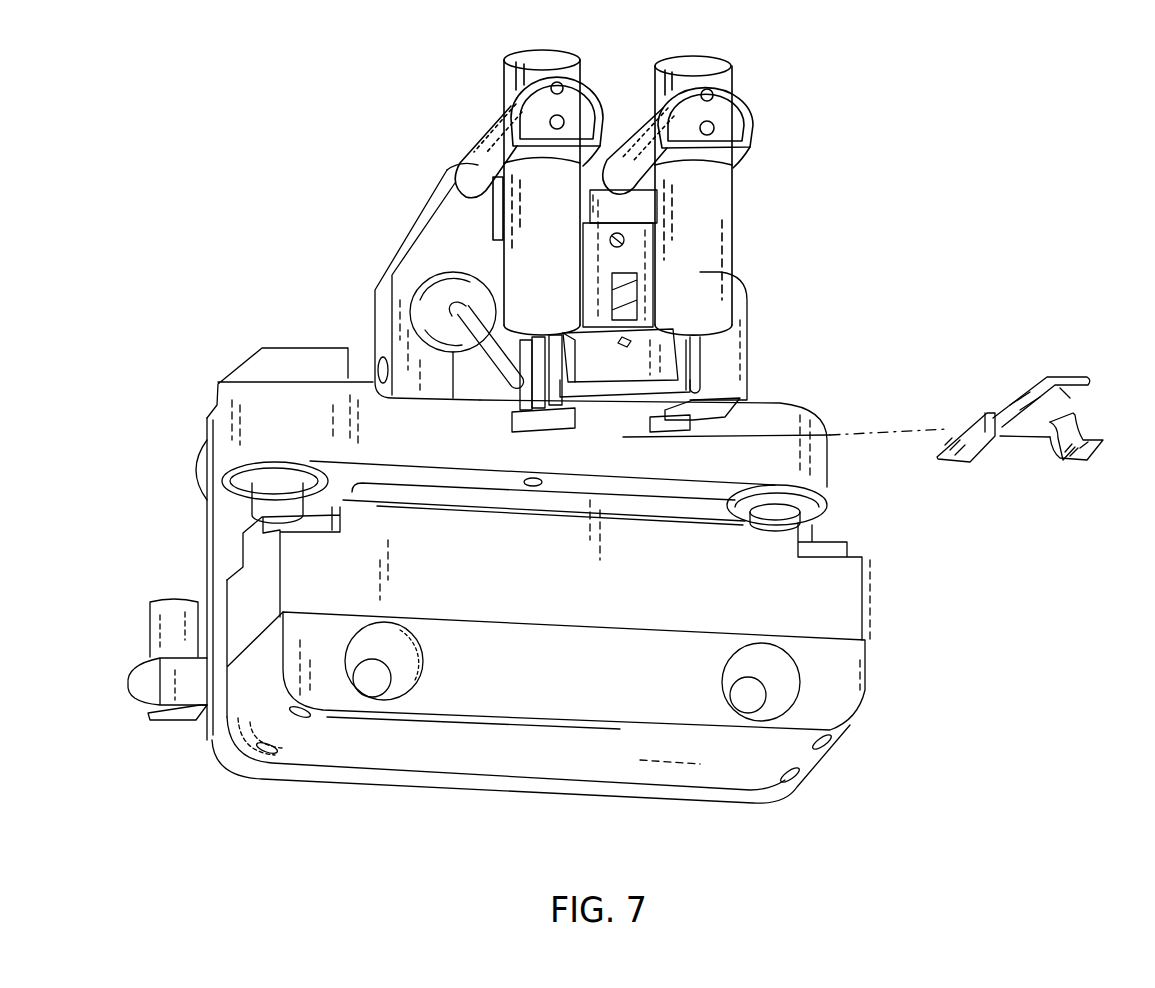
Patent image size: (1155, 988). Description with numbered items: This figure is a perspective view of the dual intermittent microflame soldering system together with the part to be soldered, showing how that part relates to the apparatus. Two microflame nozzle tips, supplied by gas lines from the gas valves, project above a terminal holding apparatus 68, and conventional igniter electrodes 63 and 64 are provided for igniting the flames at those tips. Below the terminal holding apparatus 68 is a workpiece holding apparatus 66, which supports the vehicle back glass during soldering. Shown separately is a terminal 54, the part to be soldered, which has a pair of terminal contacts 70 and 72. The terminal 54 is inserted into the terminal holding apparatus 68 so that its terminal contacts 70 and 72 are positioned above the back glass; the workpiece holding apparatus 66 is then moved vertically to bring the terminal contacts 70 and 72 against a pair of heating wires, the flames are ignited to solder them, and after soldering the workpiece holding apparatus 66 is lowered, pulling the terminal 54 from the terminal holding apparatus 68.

The terminal 54 is at (1052, 390).
The igniter electrode 63 is at (700, 372).
The igniter electrode 64 is at (500, 370).
The workpiece holding apparatus 66 is at (853, 603).
The terminal holding apparatus 68 is at (712, 404).
The terminal contact 70 is at (1090, 462).
The terminal contact 72 is at (962, 462).